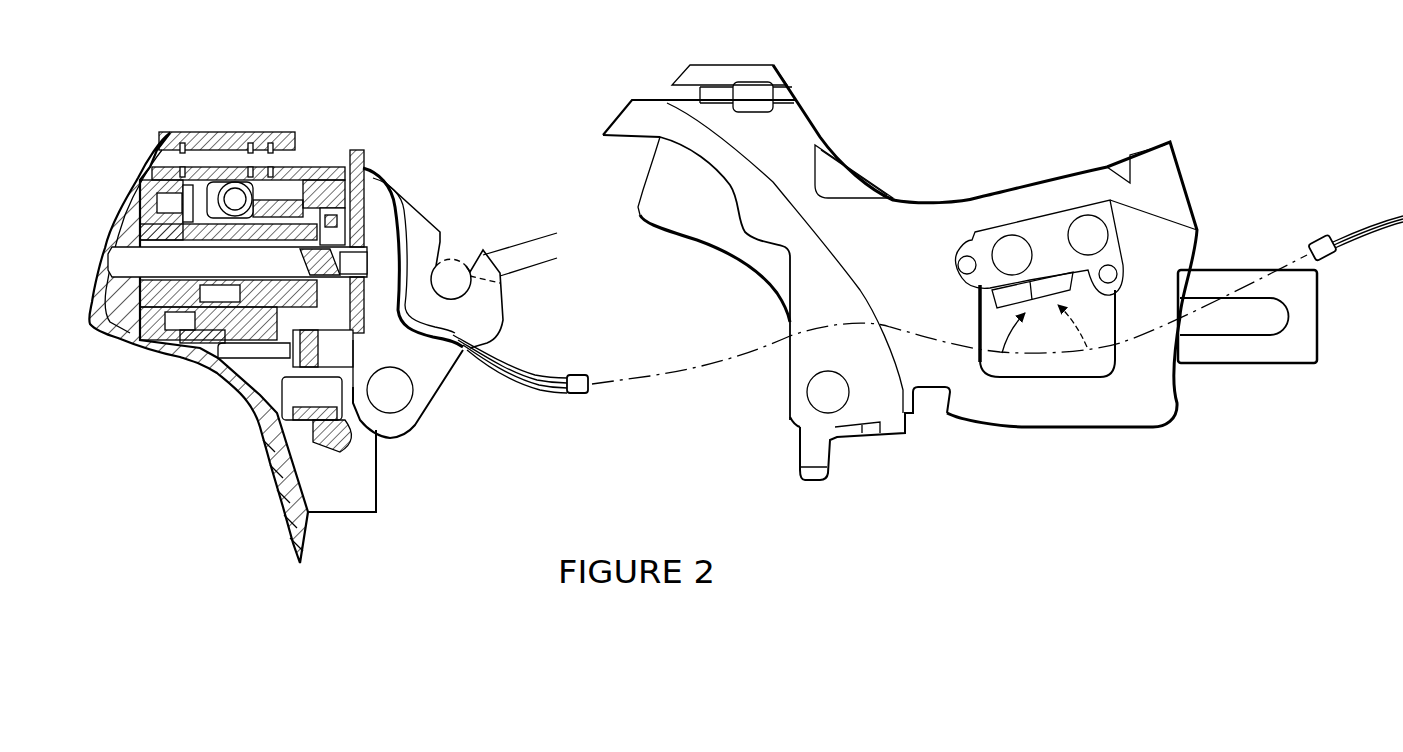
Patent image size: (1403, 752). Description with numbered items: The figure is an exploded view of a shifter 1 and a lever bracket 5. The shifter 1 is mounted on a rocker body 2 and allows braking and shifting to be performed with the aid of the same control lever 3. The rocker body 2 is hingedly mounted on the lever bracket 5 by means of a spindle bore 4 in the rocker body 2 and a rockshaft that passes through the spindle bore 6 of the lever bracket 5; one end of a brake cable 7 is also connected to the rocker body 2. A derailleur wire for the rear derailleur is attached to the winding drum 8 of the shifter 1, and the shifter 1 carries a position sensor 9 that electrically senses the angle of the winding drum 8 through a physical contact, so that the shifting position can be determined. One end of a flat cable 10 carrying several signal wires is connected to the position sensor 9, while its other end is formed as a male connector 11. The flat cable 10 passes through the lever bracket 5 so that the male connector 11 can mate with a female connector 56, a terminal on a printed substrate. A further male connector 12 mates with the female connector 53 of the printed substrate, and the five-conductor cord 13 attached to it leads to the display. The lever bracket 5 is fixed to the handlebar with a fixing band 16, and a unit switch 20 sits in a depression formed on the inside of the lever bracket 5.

The shifter 1 is at (240, 357).
The rocker body 2 is at (433, 390).
The control lever 3 is at (287, 521).
The spindle bore 4 is at (395, 403).
The lever bracket 5 is at (976, 182).
The spindle bore 6 is at (818, 393).
The brake cable 7 is at (530, 262).
The winding drum 8 is at (202, 350).
The position sensor 9 is at (210, 193).
The flat cable 10 is at (530, 378).
The male connector 11 is at (578, 395).
The male connector 12 is at (1312, 243).
The five-conductor cord 13 is at (1362, 232).
The fixing band 16 is at (1250, 355).
The unit switch 20 is at (1022, 386).
The female connector 53 is at (1110, 300).
The female connector 56 is at (1002, 303).